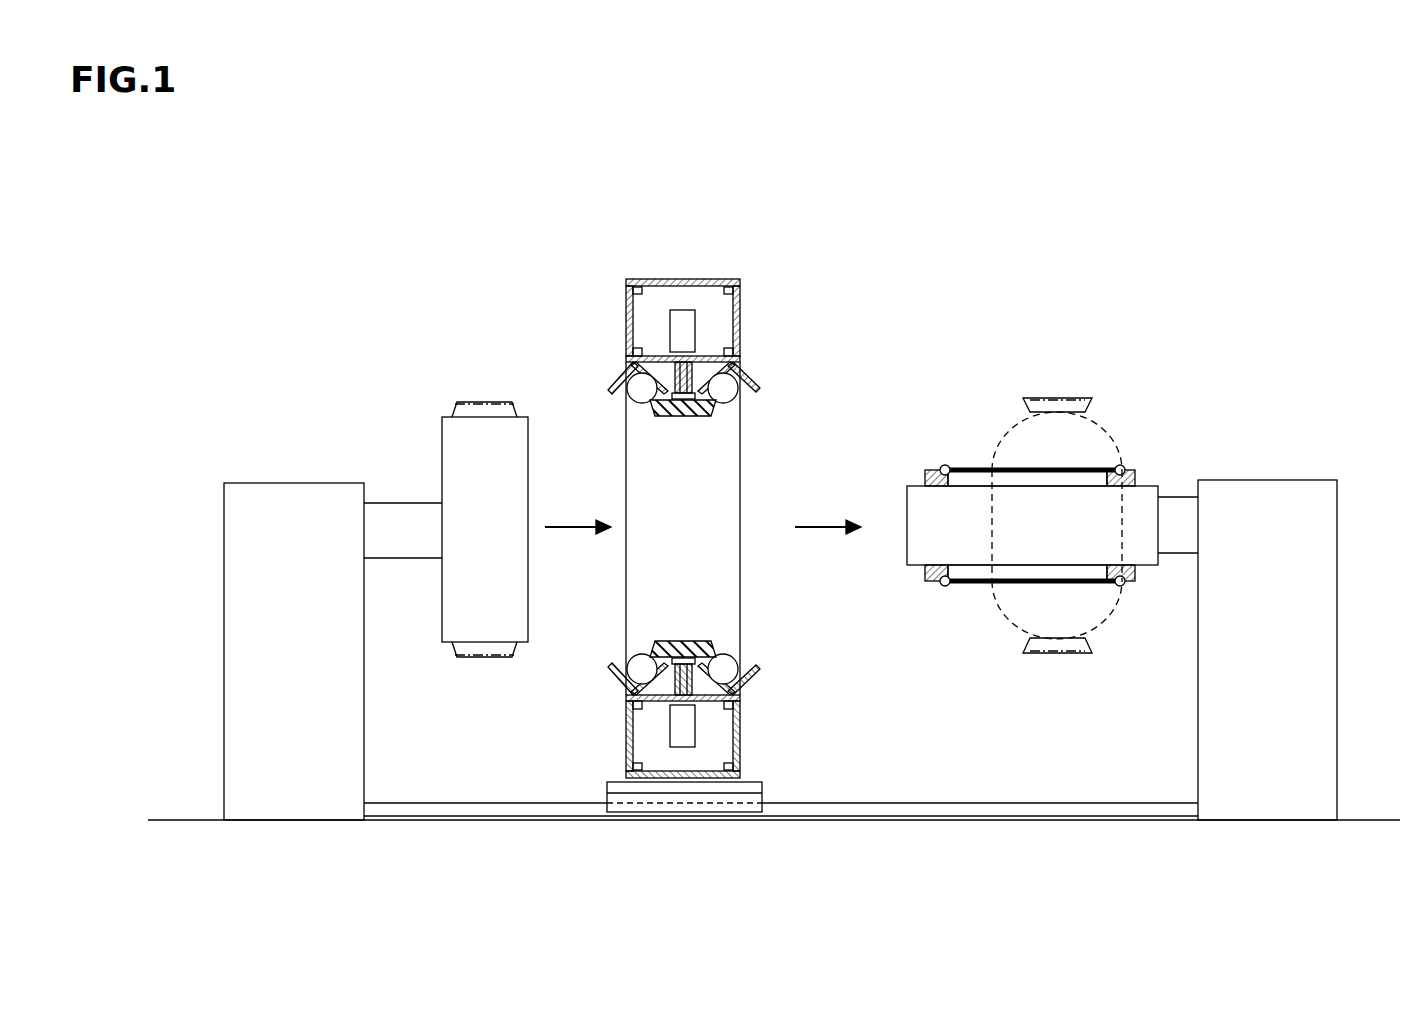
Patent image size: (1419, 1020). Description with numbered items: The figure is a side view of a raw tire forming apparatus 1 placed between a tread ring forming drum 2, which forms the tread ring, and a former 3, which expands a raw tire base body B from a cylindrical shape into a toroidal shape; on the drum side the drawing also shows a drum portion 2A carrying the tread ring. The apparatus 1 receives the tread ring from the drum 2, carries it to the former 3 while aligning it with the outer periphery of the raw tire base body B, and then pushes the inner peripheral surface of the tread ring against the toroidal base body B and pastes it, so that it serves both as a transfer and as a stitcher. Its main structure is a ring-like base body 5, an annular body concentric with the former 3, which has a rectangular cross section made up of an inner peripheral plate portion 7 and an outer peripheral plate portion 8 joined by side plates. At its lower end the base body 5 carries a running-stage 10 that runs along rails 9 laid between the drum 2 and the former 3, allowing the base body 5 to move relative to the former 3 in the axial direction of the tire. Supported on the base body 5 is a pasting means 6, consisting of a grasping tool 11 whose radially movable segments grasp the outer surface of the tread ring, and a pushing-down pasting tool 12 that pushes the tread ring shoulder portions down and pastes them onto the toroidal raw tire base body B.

The raw tire forming apparatus 1 is at (758, 469).
The tread ring forming drum 2 is at (373, 477).
The first drum 2A is at (442, 428).
The former 3 is at (1160, 478).
The ring-like base body 5 is at (663, 272).
The pasting means 6 is at (799, 510).
The inner peripheral plate portion 7 is at (652, 356).
The outer peripheral plate portion 8 is at (645, 279).
The rails 9 is at (947, 808).
The running-stage 10 is at (762, 785).
The grasping tool 11 is at (742, 433).
The pushing-down pasting tool 12 is at (747, 400).
The raw tire base body B is at (1097, 423).